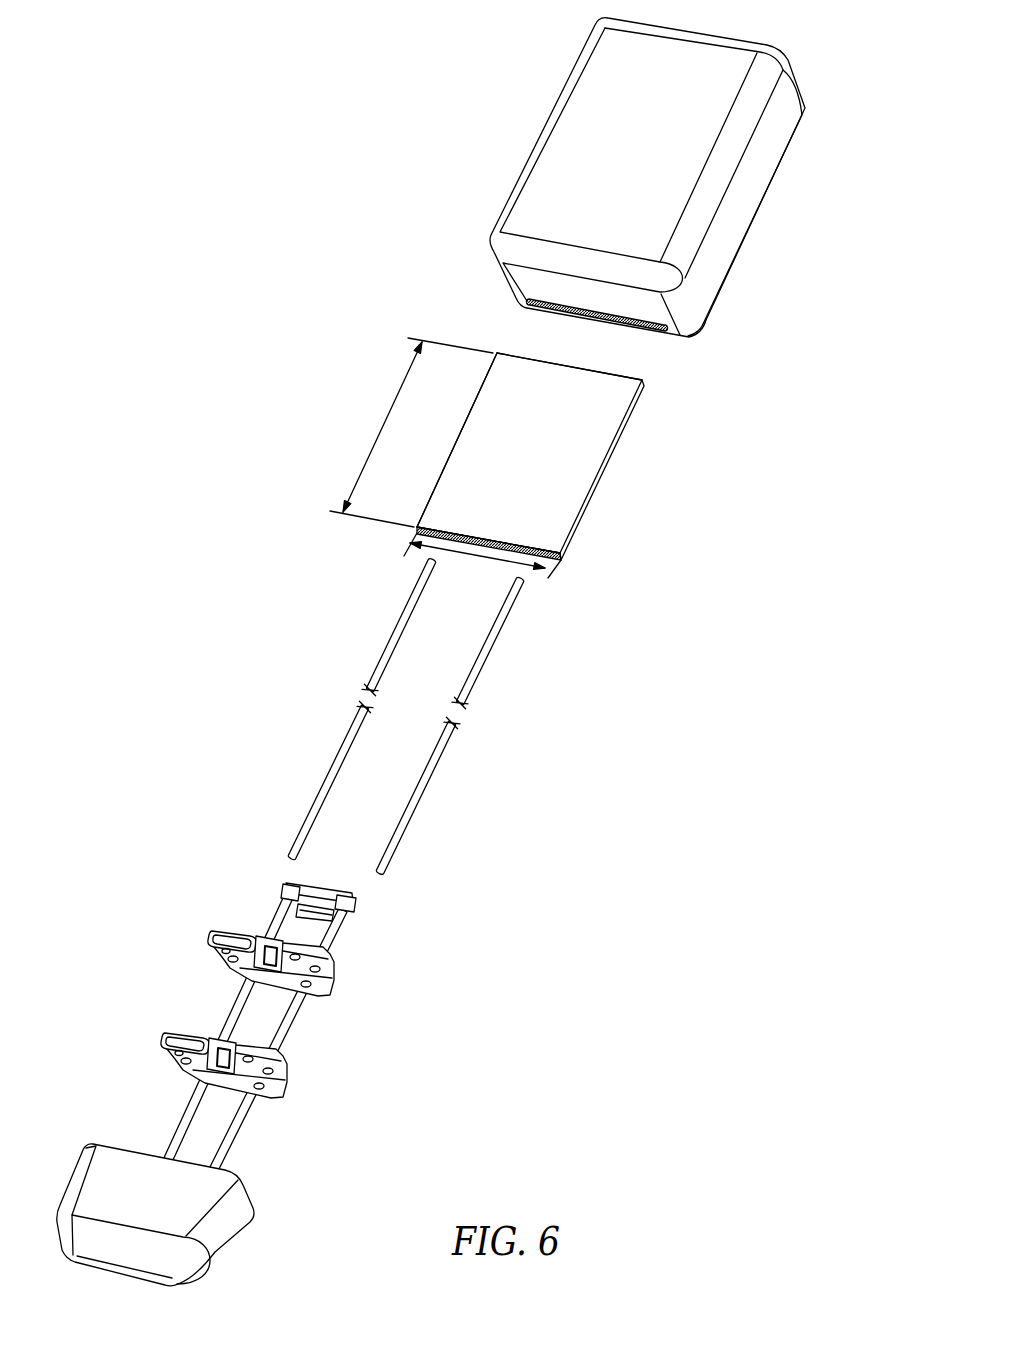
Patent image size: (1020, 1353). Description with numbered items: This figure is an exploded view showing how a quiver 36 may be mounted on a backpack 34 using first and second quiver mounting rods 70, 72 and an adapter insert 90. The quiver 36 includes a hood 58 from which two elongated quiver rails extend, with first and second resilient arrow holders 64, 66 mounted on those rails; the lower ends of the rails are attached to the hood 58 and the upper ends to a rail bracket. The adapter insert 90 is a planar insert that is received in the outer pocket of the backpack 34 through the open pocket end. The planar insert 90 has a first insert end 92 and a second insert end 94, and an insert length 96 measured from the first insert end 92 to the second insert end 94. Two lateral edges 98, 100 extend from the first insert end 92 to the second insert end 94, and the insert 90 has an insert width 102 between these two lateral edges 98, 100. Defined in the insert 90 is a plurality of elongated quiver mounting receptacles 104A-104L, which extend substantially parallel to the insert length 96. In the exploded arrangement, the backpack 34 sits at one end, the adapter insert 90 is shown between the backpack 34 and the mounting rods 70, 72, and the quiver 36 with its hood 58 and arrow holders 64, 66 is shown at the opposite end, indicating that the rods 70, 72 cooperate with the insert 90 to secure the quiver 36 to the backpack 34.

The backpack 34 is at (722, 219).
The quiver 36 is at (289, 1027).
The hood 58 is at (225, 1228).
The first resilient arrow holder 64 is at (335, 970).
The second resilient arrow holder 66 is at (317, 1033).
The first quiver mounting rod 70 is at (347, 741).
The second quiver mounting rod 72 is at (432, 768).
The adapter insert 90 is at (535, 494).
The first insert end 92 is at (560, 563).
The second insert end 94 is at (620, 375).
The insert length 96 is at (404, 383).
The lateral edge 98 is at (440, 478).
The lateral edge 100 is at (624, 422).
The insert width 102 is at (530, 570).
The elongated quiver mounting receptacles 104A-104L is at (550, 545).